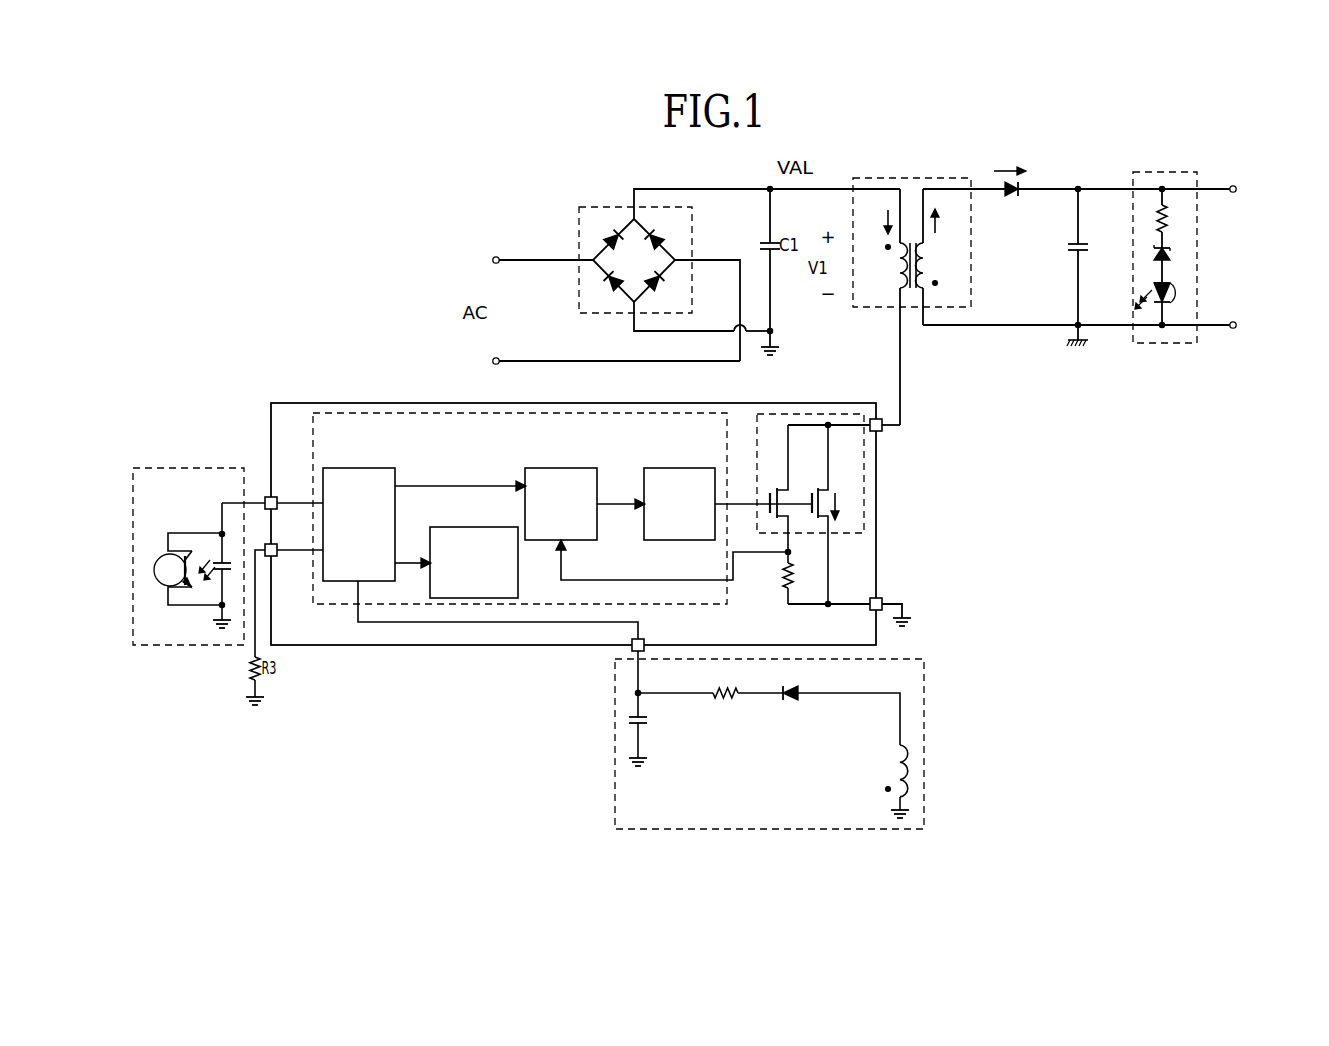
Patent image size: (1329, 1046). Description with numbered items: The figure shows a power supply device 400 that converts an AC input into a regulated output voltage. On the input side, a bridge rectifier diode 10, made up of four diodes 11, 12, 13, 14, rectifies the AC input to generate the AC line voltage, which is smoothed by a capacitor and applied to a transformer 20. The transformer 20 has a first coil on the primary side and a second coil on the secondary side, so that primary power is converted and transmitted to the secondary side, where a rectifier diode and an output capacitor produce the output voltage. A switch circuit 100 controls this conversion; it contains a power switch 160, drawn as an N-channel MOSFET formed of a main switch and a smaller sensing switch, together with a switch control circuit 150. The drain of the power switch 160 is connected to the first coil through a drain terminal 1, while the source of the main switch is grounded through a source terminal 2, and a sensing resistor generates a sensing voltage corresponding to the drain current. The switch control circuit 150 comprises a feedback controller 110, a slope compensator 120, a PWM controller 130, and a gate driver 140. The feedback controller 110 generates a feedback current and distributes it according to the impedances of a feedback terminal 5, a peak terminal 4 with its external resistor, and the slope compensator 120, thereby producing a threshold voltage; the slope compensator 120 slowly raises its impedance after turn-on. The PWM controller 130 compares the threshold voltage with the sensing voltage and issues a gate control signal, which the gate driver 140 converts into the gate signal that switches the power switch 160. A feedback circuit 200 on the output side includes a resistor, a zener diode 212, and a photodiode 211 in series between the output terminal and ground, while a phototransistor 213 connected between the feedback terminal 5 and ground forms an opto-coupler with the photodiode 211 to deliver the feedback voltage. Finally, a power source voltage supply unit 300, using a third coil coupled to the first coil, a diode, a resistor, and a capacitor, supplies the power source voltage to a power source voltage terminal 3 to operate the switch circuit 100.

The bridge rectifier diode 10 is at (610, 207).
The diode 11 is at (605, 230).
The diode 12 is at (605, 292).
The diode 13 is at (662, 230).
The diode 14 is at (662, 292).
The transformer 20 is at (910, 178).
The power supply device 400 is at (1112, 211).
The zener diode 212 is at (1170, 253).
The photodiode 211 is at (1178, 293).
The switch circuit 100 is at (373, 645).
The switch control circuit 150 is at (365, 413).
The feedback controller 110 is at (358, 468).
The slope compensator 120 is at (473, 527).
The PWM controller 130 is at (562, 468).
The gate driver 140 is at (679, 468).
The power switch 160 is at (865, 477).
The drain terminal 1 is at (883, 422).
The source terminal 2 is at (883, 602).
The power source voltage terminal 3 is at (645, 643).
The peak terminal 4 is at (274, 557).
The feedback terminal 5 is at (266, 494).
The feedback circuit 200 is at (191, 532).
The phototransistor 213 is at (161, 554).
The power source voltage supply unit 300 is at (924, 745).